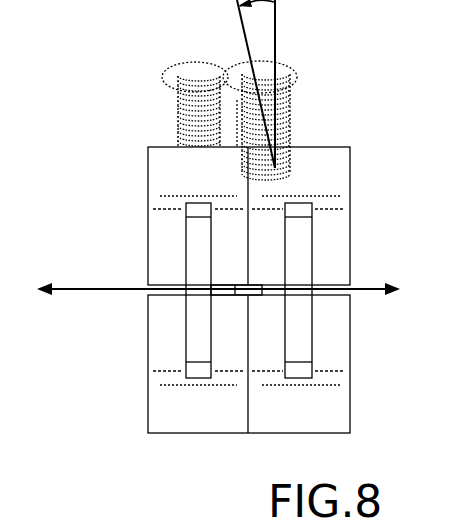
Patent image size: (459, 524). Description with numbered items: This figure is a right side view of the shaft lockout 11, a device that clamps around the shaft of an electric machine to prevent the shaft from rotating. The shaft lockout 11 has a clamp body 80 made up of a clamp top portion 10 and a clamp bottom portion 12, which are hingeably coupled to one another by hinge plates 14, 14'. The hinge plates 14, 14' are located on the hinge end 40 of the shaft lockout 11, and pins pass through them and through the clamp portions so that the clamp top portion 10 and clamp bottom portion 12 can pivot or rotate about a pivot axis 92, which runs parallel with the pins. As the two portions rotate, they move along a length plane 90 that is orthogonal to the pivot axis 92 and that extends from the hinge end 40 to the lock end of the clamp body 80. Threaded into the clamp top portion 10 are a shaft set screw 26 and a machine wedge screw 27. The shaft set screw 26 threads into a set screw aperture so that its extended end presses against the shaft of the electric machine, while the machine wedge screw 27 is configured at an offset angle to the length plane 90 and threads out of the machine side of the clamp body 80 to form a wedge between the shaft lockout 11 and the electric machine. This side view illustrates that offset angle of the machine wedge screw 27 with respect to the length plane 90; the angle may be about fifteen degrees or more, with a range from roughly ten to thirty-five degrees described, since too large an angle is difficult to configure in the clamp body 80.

The clamp top portion 10 is at (161, 166).
The shaft lockout 11 is at (140, 123).
The clamp bottom portion 12 is at (165, 402).
The hinge plate 14 is at (149, 290).
The hinge plate 14' is at (349, 290).
The shaft set screw 26 is at (175, 58).
The machine wedge screw 27 is at (292, 90).
The hinge end 40 is at (292, 402).
The clamp body 80 is at (333, 168).
The length plane 90 is at (277, 8).
The pivot axis 92 is at (70, 287).